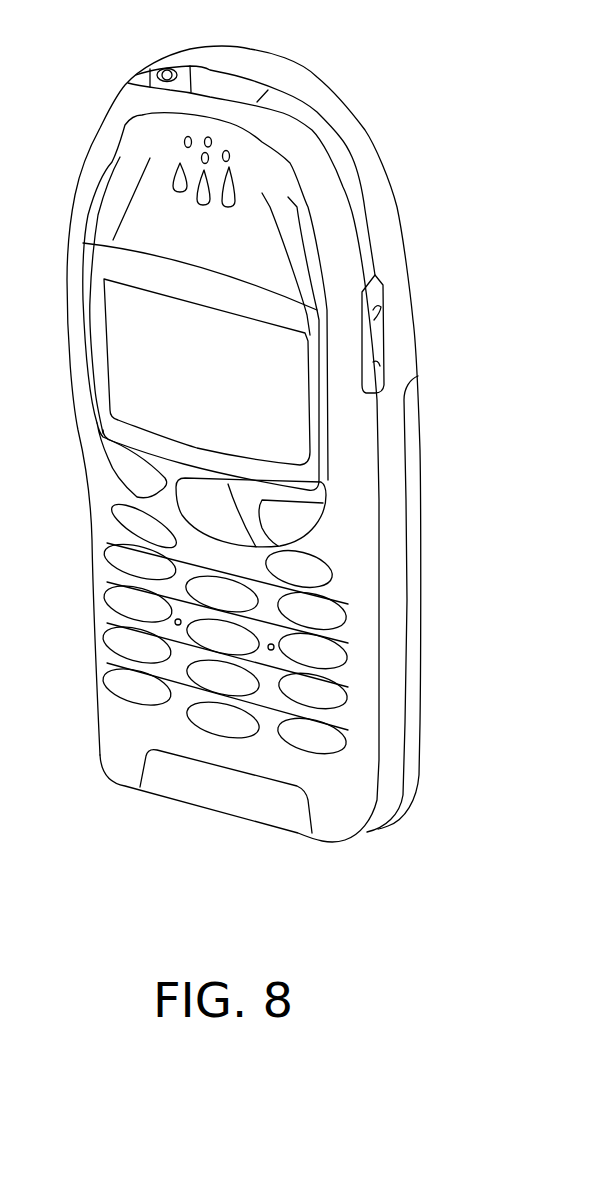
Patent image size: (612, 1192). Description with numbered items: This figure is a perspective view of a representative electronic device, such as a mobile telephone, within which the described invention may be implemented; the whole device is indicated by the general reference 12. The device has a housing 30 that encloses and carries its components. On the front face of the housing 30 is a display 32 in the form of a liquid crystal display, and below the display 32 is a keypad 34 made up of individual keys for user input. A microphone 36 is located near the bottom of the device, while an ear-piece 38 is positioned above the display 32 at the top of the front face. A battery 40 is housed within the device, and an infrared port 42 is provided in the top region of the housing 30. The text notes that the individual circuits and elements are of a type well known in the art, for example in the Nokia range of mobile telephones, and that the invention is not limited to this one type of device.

The mobile telephone 12 is at (356, 57).
The housing 30 is at (389, 206).
The display 32 is at (290, 413).
The keypad 34 is at (312, 742).
The microphone 36 is at (167, 780).
The ear-piece 38 is at (173, 165).
The battery 40 is at (414, 723).
The infrared port 42 is at (228, 80).